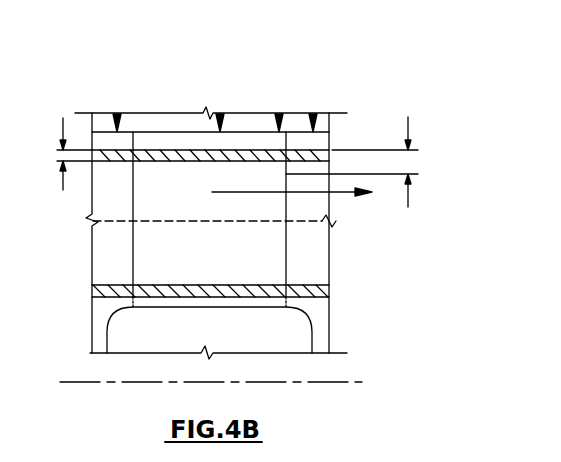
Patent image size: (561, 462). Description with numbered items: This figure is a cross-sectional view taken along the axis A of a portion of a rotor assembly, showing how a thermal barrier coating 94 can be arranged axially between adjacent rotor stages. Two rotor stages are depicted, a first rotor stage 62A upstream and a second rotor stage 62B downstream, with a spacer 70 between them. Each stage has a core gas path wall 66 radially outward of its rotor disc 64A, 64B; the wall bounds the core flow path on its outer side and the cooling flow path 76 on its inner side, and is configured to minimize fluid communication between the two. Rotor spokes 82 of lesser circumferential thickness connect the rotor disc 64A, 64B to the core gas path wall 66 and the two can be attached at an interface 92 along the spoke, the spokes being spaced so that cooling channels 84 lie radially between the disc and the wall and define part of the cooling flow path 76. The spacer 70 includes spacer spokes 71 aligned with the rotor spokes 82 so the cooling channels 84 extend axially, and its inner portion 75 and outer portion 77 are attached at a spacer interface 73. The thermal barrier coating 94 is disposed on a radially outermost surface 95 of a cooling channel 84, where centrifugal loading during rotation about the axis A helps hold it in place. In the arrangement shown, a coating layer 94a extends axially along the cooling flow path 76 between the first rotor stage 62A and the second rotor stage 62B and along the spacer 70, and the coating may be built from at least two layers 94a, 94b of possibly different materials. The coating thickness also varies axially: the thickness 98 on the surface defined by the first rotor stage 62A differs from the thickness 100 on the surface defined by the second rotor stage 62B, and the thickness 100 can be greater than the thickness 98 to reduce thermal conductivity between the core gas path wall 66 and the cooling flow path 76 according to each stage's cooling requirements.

The first rotor stage 62A is at (117, 114).
The second rotor stage 62B is at (314, 114).
The core gas path wall 66 is at (279, 114).
The spacer 70 is at (220, 114).
The outer portion 77 is at (190, 142).
The thermal barrier coating 94 is at (193, 132).
The thermal barrier coating layer 94a is at (324, 162).
The thermal barrier coating layer 94b is at (313, 161).
The radially outermost surface 95 is at (117, 150).
The thickness 98 is at (63, 190).
The thickness 100 is at (408, 117).
The rotor spoke 82 is at (133, 183).
The cooling flow path 76 is at (348, 196).
The interface 92 is at (303, 222).
The spacer spoke 71 is at (287, 268).
The spacer interface 73 is at (243, 223).
The cooling channel 84 is at (223, 259).
The inner portion 75 is at (233, 306).
The rotor disc 64A is at (100, 337).
The rotor disc 64B is at (323, 327).
The axis A is at (362, 382).